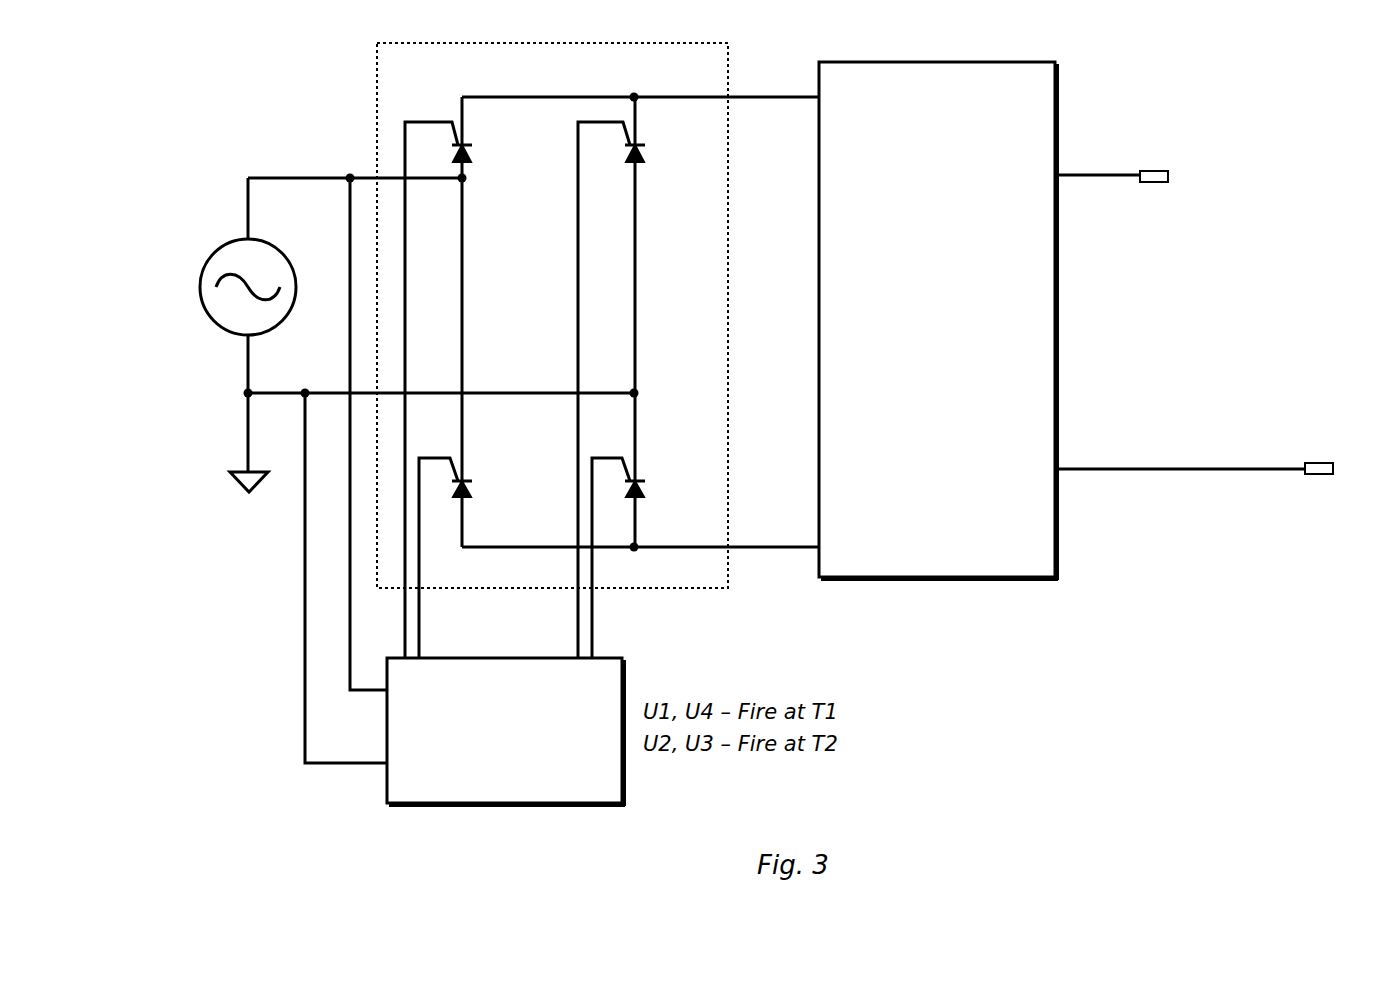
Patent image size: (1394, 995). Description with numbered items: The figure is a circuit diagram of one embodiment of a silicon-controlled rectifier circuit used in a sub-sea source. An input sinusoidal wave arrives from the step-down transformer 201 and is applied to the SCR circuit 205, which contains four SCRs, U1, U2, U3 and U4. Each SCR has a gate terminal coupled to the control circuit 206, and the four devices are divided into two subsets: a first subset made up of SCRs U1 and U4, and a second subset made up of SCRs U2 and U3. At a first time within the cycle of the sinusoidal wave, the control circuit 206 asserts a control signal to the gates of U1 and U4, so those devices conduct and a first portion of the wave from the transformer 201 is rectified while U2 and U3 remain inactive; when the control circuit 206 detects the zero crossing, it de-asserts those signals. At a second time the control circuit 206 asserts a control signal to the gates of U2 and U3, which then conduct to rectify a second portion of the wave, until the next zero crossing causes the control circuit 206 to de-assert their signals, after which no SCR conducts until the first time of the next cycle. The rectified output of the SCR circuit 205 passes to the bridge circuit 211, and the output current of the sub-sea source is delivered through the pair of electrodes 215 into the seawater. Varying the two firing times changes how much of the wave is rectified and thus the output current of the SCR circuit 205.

The step-down transformer 201 is at (222, 244).
The SCR circuit 205 is at (552, 350).
The control circuit 206 is at (506, 732).
The bridge circuit 211 is at (938, 321).
The electrodes 215 is at (1153, 170).
The SCR U1 is at (458, 390).
The SCR U2 is at (632, 390).
The SCR U3 is at (464, 558).
The SCR U4 is at (635, 558).